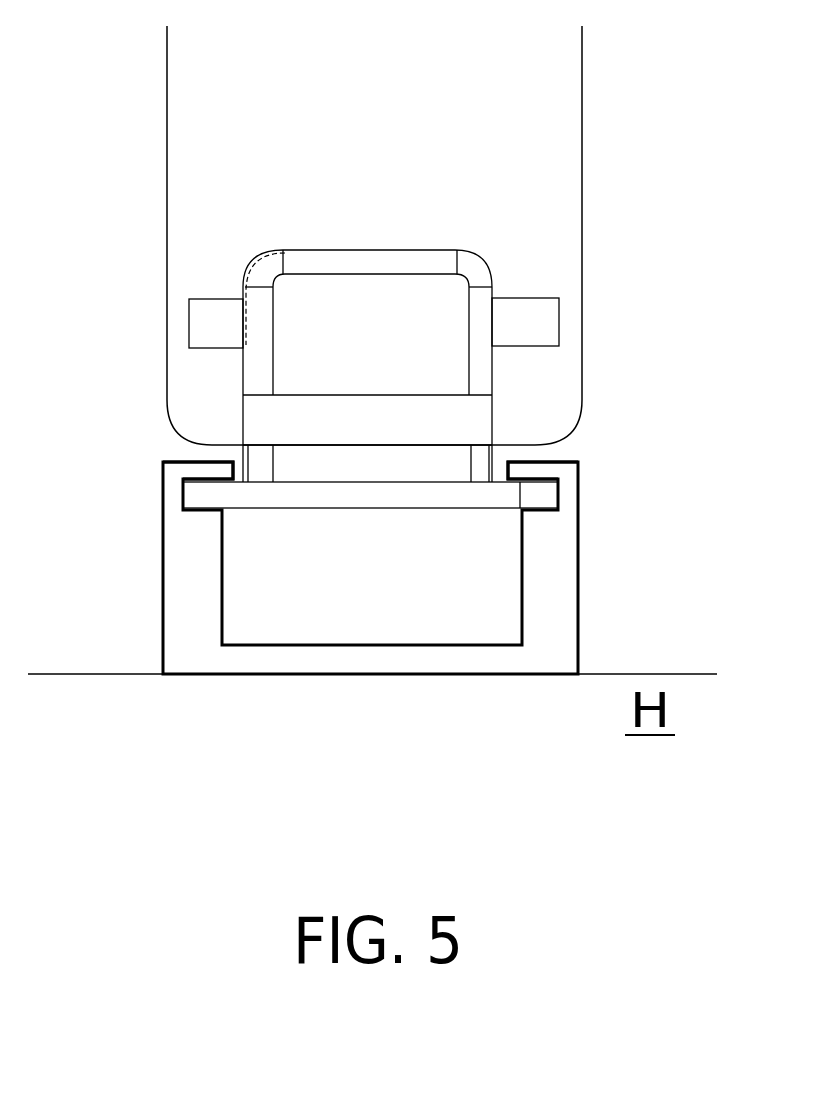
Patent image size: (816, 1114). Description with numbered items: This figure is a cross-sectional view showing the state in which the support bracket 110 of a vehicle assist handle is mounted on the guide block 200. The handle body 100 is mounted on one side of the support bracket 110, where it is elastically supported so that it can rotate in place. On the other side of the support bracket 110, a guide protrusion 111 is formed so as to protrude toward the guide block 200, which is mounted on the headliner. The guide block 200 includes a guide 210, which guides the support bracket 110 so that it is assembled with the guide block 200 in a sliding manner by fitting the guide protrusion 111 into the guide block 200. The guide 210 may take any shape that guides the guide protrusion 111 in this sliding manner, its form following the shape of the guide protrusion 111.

The handle body 100 is at (547, 232).
The support bracket 110 is at (375, 312).
The guide protrusion 111 is at (202, 497).
The guide block 200 is at (420, 660).
The guide 210 is at (187, 485).